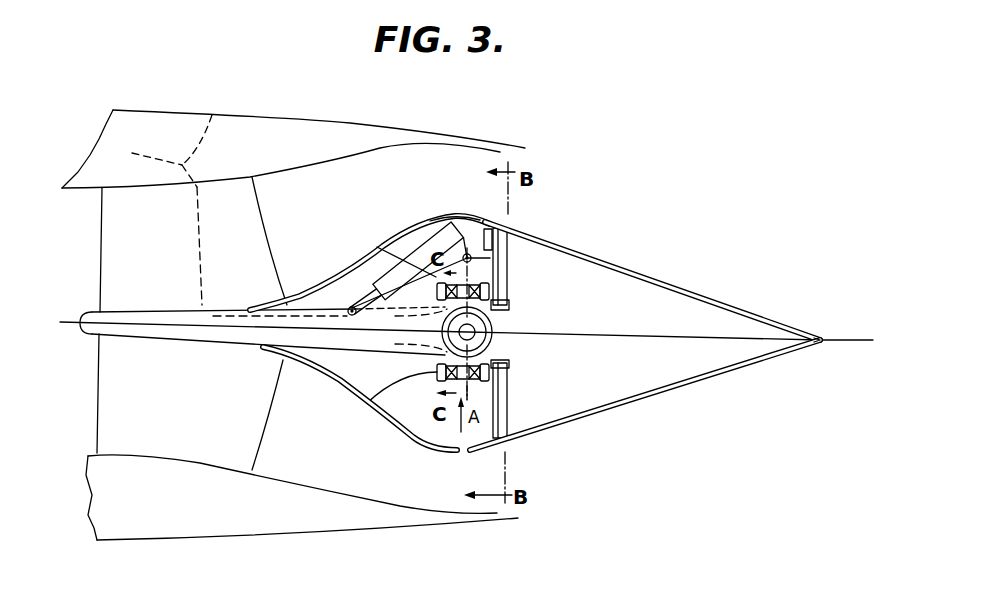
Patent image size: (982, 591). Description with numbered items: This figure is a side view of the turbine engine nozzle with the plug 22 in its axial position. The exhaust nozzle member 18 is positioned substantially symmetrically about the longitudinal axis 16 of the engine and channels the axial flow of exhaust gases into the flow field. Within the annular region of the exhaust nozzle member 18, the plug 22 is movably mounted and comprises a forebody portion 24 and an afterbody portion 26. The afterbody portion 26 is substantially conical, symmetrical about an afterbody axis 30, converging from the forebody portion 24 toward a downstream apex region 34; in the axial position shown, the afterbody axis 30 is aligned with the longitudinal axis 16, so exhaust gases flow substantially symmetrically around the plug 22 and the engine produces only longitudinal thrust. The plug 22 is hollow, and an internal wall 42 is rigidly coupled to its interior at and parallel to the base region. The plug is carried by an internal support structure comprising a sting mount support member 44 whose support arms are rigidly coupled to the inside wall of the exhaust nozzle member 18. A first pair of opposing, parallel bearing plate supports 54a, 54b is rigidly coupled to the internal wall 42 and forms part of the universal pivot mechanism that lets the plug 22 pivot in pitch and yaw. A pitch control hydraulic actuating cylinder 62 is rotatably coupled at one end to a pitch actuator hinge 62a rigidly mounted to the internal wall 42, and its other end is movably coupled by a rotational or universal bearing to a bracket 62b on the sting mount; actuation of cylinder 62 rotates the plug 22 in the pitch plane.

The longitudinal axis 16 is at (841, 340).
The exhaust nozzle member 18 is at (447, 147).
The plug 22 is at (655, 260).
The forebody portion 24 is at (417, 443).
The afterbody portion 26 is at (662, 387).
The afterbody axis 30 is at (666, 337).
The apex region 34 is at (818, 337).
The internal wall 42 is at (509, 258).
The internal sting mount support member 44 is at (103, 262).
The bearing plate support 54a is at (378, 247).
The bearing plate support 54b is at (378, 398).
The pitch control hydraulic actuating cylinder 62 is at (410, 247).
The pitch actuator hinge 62a is at (212, 115).
The bracket 62b is at (349, 306).